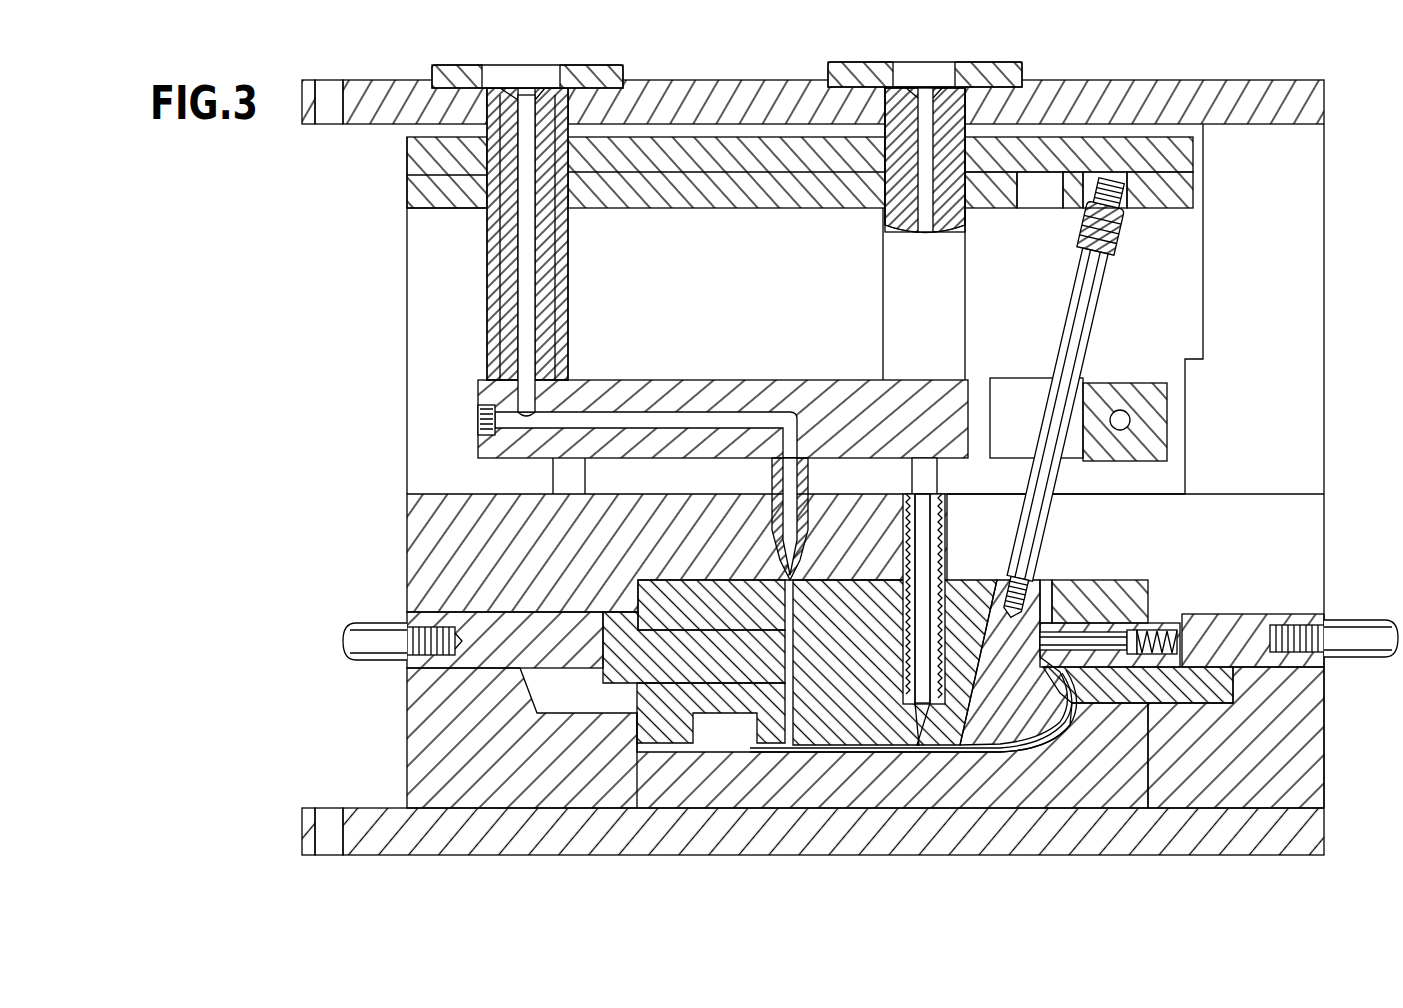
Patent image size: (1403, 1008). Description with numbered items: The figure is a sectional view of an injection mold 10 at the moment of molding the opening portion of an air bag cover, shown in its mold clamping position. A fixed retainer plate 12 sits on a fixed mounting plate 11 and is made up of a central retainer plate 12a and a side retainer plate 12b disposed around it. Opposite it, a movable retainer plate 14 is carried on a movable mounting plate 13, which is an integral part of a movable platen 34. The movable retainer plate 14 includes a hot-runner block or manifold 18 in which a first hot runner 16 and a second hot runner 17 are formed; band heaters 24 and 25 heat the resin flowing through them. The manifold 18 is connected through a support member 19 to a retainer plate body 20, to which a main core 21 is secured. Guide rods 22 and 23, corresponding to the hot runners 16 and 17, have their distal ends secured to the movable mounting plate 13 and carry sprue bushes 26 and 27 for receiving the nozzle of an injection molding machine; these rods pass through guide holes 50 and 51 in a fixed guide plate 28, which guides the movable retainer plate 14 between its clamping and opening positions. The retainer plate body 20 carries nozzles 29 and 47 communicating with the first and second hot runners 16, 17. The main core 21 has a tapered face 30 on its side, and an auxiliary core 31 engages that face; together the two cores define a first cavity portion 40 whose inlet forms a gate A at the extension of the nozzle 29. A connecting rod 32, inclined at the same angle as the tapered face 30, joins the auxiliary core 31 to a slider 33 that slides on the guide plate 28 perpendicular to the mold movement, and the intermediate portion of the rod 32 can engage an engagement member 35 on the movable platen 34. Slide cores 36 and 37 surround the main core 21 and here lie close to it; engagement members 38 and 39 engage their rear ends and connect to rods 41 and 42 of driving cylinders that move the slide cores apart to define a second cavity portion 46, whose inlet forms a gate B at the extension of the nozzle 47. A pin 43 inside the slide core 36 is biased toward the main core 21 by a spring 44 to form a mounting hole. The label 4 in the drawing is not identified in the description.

The curved cavity surface 4 is at (1050, 733).
The injection mold 10 is at (378, 381).
The fixed mounting plate 11 is at (360, 808).
The fixed retainer plate 12 is at (407, 727).
The central retainer plate 12a is at (798, 808).
The side retainer plate 12b is at (530, 812).
The movable mounting plate 13 is at (705, 88).
The movable retainer plate 14 is at (462, 344).
The first hot runner 16 is at (922, 213).
The second hot runner 17 is at (528, 326).
The manifold 18 is at (718, 380).
The support member 19 is at (553, 475).
The retainer plate body 20 is at (407, 530).
The main core 21 is at (968, 578).
The guide rod 22 is at (884, 318).
The guide rod 23 is at (568, 271).
The band heater 24 is at (890, 150).
The band heater 25 is at (566, 233).
The sprue bush 26 is at (850, 70).
The sprue bush 27 is at (466, 72).
The fixed guide plate 28 is at (407, 188).
The nozzle 29 is at (905, 530).
The tapered face 30 is at (1005, 748).
The auxiliary core 31 is at (1048, 592).
The connecting rod 32 is at (1090, 318).
The slider 33 is at (1090, 200).
The movable platen 34 is at (1187, 252).
The engagement member 35 is at (1168, 418).
The slide core 36 is at (1168, 614).
The slide core 37 is at (640, 612).
The engagement member 38 is at (1230, 614).
The engagement member 39 is at (499, 612).
The first cavity portion 40 is at (915, 748).
The rod 41 is at (1352, 622).
The rod 42 is at (370, 627).
The pin 43 is at (1100, 638).
The spring 44 is at (1173, 703).
The second cavity portion 46 is at (1080, 586).
The nozzle 47 is at (772, 518).
The guide hole 50 is at (983, 208).
The guide hole 51 is at (470, 208).
The gate A is at (953, 775).
The gate B is at (828, 603).